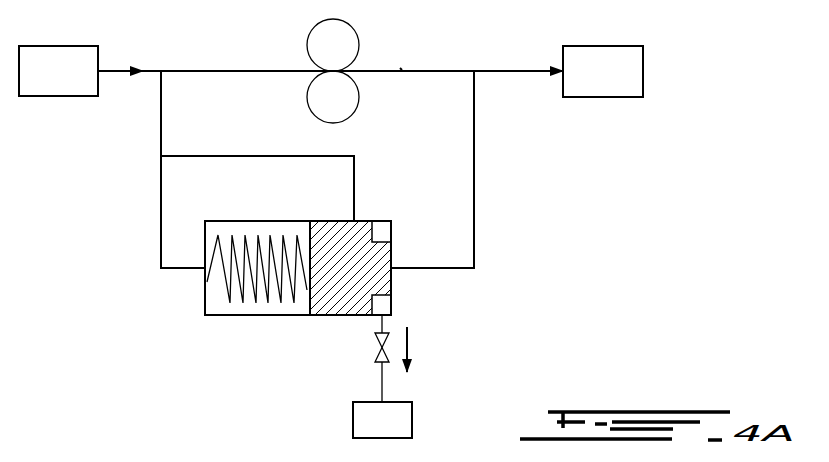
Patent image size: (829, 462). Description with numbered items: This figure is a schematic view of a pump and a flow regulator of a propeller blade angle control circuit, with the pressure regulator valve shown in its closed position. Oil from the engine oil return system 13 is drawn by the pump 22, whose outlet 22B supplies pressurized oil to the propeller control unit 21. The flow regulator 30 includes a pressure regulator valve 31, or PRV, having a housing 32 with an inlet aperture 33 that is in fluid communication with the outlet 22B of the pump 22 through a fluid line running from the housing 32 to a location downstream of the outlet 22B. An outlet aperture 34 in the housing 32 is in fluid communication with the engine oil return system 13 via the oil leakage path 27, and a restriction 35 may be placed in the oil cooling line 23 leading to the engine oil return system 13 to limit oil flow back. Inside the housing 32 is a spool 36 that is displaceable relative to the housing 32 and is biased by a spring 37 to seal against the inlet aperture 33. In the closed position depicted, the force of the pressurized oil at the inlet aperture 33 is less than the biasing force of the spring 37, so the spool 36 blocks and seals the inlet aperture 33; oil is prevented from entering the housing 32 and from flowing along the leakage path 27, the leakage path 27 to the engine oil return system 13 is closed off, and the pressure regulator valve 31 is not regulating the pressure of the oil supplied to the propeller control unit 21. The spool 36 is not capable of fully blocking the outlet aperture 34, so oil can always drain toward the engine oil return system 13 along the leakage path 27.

The engine oil return system 13 is at (215, 242).
The propeller control unit 21 is at (603, 71).
The pump 22 is at (315, 28).
The outlet of the pump 22B is at (402, 70).
The oil cooling line 23 is at (382, 380).
The oil leakage path 27 is at (407, 340).
The flow regulator 30 is at (281, 285).
The pressure regulator valve 31 is at (215, 328).
The housing 32 is at (262, 316).
The inlet aperture 33 is at (393, 271).
The outlet aperture 34 is at (393, 318).
The restriction 35 is at (376, 346).
The spool 36 is at (356, 242).
The spring 37 is at (246, 240).